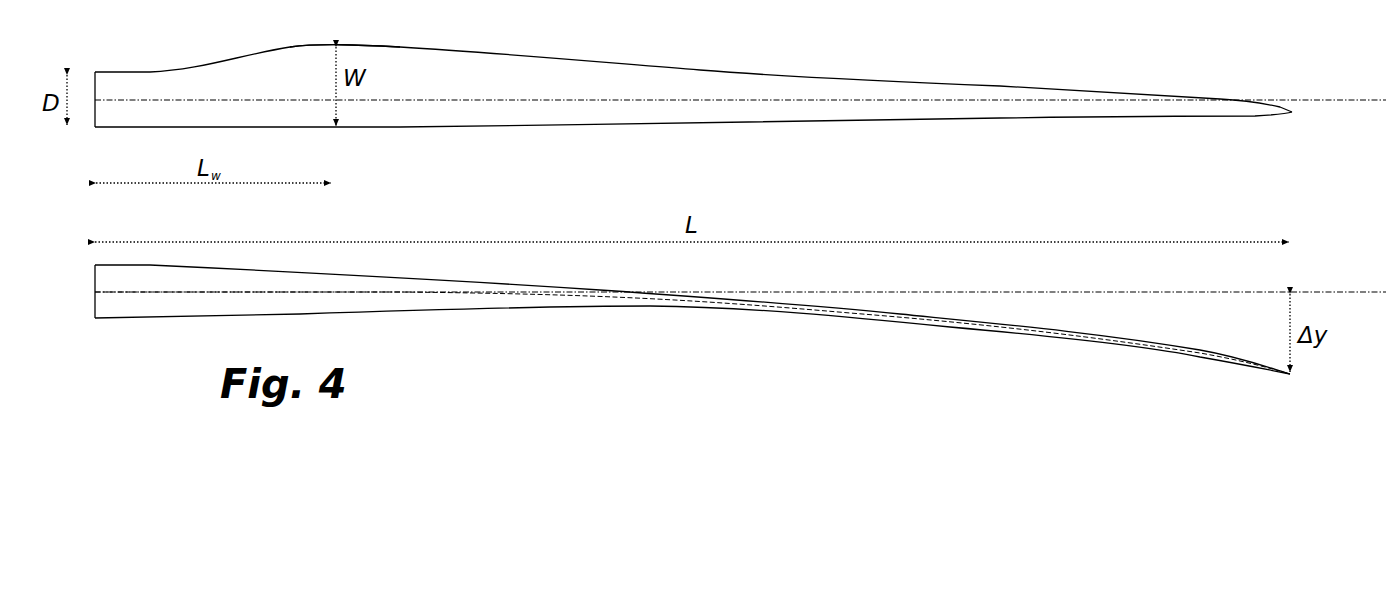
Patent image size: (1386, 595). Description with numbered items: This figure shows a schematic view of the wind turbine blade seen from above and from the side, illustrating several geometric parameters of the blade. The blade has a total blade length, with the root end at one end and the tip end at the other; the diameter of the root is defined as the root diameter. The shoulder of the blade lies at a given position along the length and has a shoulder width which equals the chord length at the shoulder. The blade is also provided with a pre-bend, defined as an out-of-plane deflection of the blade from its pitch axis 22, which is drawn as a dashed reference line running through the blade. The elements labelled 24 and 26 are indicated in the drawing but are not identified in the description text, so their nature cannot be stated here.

The pitch axis 22 is at (568, 100).
The widened blade portion 24 is at (338, 46).
The blade mid-span portion 26 is at (875, 1).